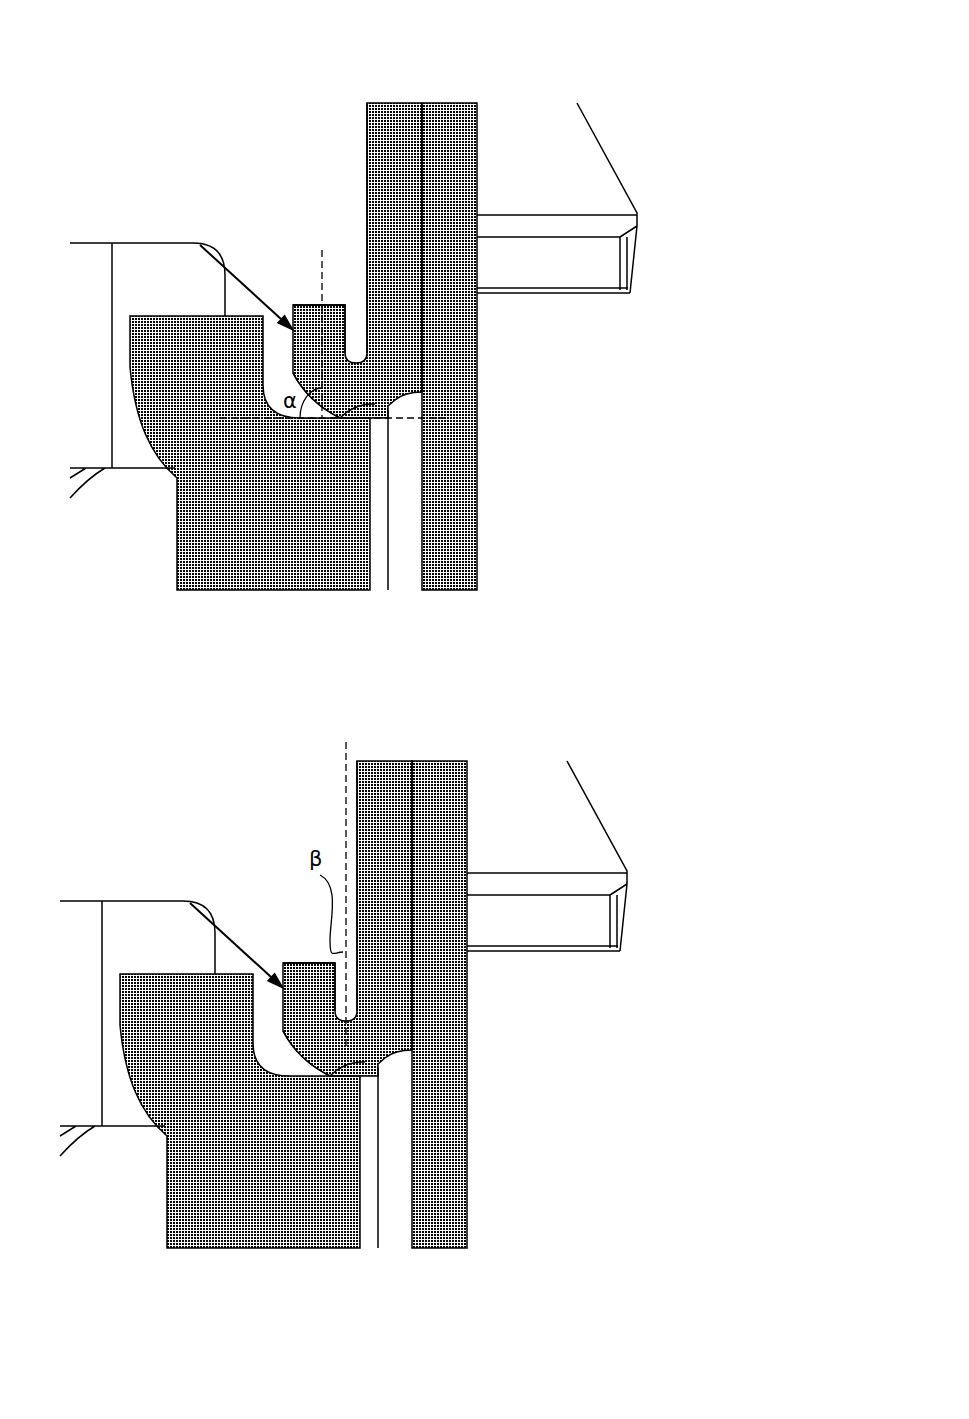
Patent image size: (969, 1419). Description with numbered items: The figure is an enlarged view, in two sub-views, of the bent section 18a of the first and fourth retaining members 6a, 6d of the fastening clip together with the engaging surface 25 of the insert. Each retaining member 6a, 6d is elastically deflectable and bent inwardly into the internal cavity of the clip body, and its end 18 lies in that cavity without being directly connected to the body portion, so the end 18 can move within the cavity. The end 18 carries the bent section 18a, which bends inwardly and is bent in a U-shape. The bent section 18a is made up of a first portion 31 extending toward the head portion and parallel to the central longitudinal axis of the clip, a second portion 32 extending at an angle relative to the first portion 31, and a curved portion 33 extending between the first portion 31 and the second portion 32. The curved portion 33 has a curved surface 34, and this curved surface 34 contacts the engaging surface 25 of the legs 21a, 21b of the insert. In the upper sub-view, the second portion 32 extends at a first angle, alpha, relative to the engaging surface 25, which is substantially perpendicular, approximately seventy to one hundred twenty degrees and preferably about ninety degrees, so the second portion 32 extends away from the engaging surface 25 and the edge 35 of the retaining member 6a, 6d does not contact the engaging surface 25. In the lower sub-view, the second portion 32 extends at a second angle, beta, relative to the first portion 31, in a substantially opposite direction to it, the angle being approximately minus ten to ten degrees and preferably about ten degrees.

The first retaining member 6a is at (472, 628).
The fourth retaining member 6d is at (397, 127).
The end of the retaining member 18 is at (410, 290).
The bent section 18a is at (275, 318).
The leg of the insert 21a is at (375, 782).
The leg of the insert 21b is at (308, 530).
The engaging surface 25 is at (385, 405).
The first portion 31 is at (400, 338).
The second portion 32 is at (331, 317).
The curved portion 33 is at (360, 388).
The curved surface 34 is at (375, 404).
The edge of the retaining member 35 is at (294, 317).